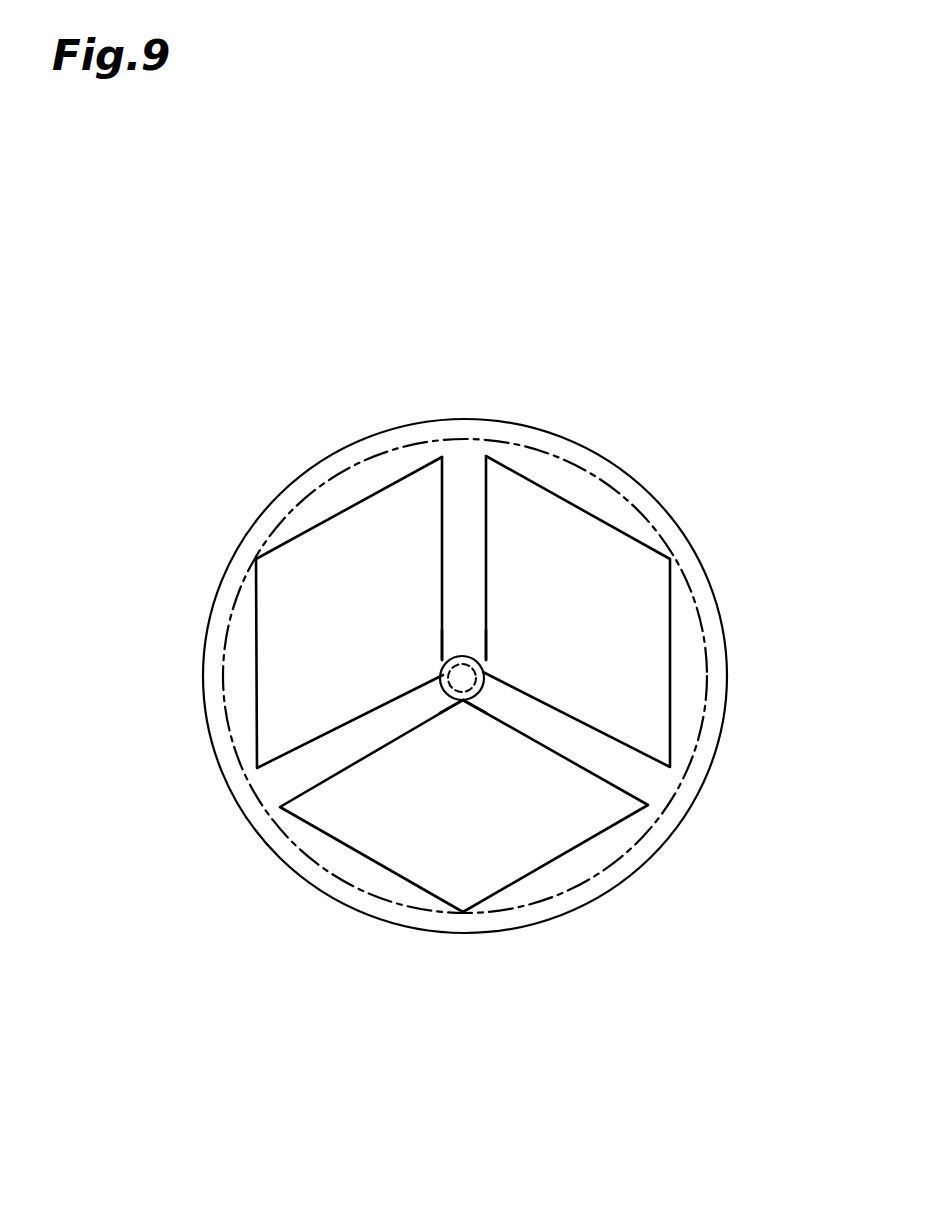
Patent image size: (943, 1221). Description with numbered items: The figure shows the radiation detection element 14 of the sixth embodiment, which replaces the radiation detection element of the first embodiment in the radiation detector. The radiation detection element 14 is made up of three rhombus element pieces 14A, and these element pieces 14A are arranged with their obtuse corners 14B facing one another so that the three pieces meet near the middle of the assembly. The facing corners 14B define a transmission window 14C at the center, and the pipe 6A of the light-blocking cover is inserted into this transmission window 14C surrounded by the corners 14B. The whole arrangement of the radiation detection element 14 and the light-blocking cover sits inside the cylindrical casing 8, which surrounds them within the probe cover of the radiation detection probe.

The pipe 6A is at (462, 656).
The casing 8 is at (565, 438).
The radiation detection element 14 is at (449, 660).
The element piece 14A is at (325, 598).
The obtuse corner 14B is at (427, 655).
The transmission window 14C is at (468, 677).